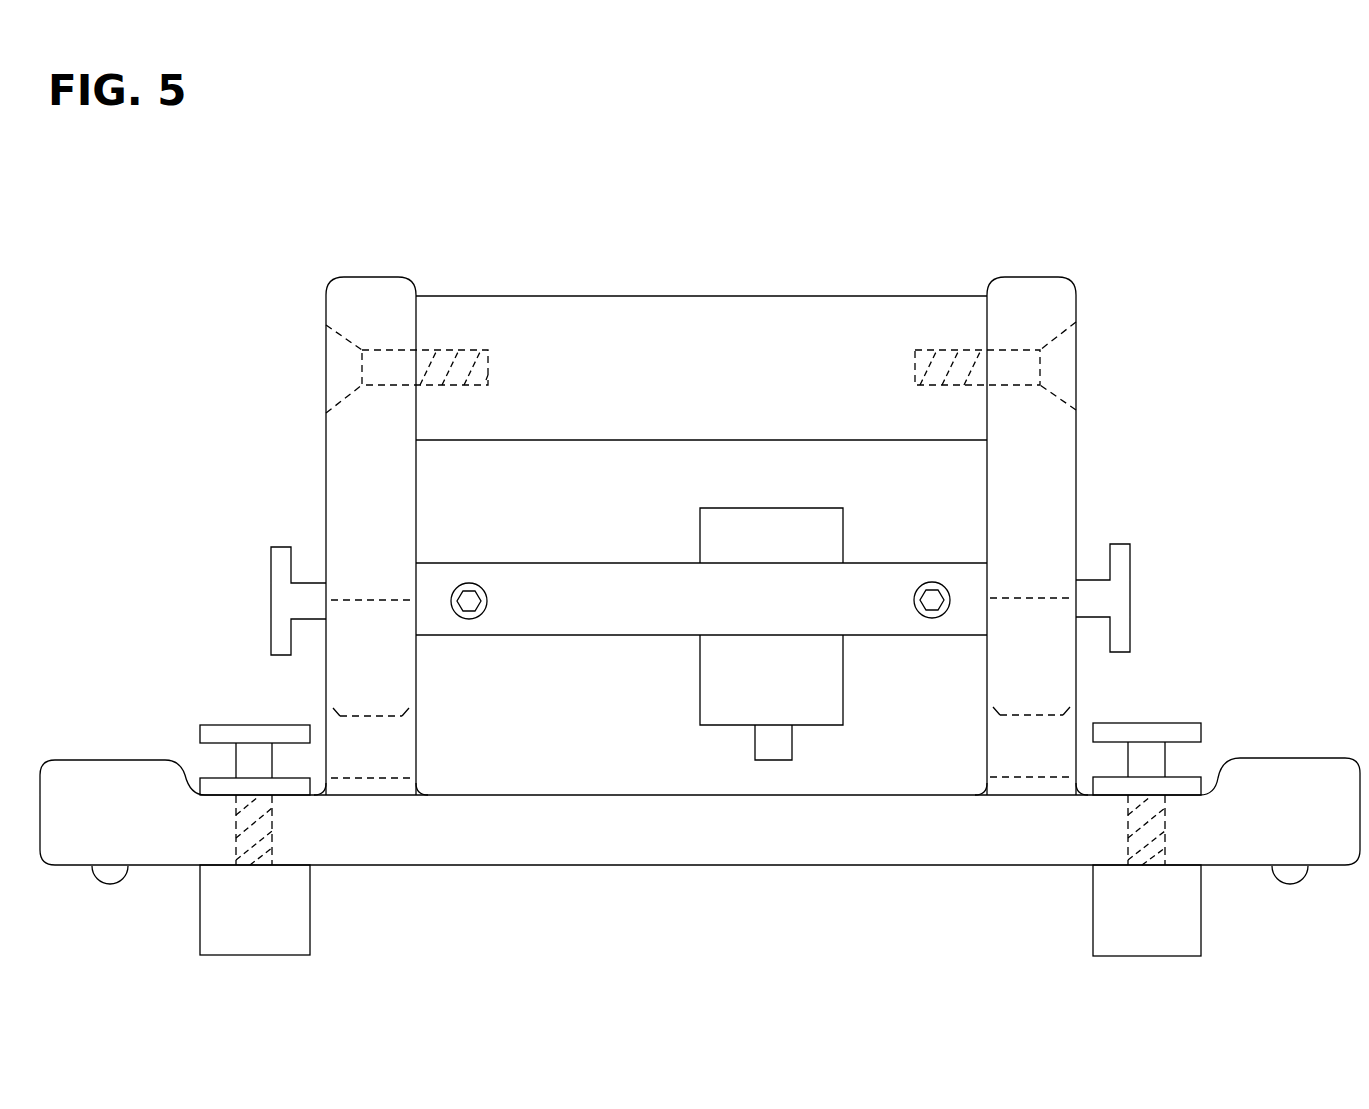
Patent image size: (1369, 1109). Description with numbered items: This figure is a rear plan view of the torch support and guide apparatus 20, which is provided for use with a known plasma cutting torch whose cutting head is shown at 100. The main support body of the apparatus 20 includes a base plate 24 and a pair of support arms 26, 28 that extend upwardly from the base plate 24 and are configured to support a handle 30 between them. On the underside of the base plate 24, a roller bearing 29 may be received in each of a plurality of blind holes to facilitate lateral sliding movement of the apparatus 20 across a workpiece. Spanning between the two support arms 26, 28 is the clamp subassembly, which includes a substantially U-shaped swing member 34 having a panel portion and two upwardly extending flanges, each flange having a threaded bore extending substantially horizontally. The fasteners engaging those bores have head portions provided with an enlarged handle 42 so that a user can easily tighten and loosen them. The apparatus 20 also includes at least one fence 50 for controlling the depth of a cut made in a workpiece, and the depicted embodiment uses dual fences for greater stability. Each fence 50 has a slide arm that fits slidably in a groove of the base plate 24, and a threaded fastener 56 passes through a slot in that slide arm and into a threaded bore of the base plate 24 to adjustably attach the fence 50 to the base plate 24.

The torch support and guide apparatus 20 is at (1135, 258).
The base plate 24 is at (690, 845).
The support arm 26 is at (1083, 457).
The support arm 28 is at (322, 450).
The roller bearing 29 is at (1296, 886).
The handle 30 is at (657, 297).
The swing member 34 is at (696, 617).
The enlarged handle 42 is at (1130, 540).
The fence 50 is at (308, 930).
The threaded fastener 56 is at (1203, 724).
The cutting head of plasma cutting torch 100 is at (808, 727).